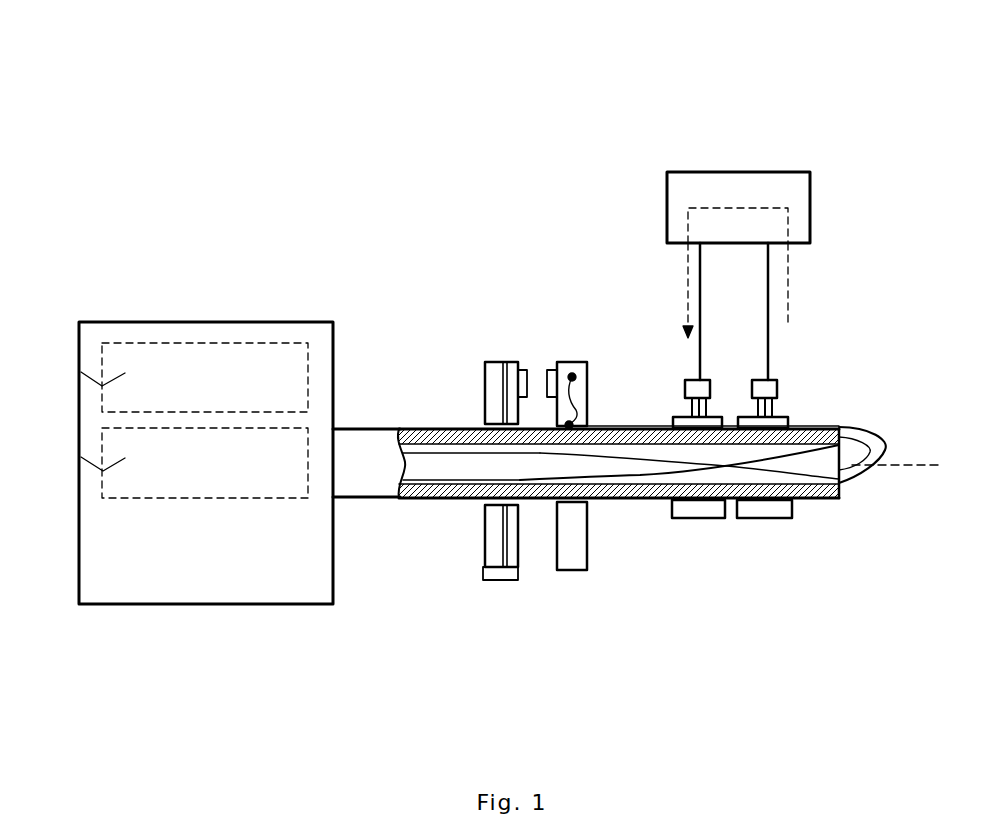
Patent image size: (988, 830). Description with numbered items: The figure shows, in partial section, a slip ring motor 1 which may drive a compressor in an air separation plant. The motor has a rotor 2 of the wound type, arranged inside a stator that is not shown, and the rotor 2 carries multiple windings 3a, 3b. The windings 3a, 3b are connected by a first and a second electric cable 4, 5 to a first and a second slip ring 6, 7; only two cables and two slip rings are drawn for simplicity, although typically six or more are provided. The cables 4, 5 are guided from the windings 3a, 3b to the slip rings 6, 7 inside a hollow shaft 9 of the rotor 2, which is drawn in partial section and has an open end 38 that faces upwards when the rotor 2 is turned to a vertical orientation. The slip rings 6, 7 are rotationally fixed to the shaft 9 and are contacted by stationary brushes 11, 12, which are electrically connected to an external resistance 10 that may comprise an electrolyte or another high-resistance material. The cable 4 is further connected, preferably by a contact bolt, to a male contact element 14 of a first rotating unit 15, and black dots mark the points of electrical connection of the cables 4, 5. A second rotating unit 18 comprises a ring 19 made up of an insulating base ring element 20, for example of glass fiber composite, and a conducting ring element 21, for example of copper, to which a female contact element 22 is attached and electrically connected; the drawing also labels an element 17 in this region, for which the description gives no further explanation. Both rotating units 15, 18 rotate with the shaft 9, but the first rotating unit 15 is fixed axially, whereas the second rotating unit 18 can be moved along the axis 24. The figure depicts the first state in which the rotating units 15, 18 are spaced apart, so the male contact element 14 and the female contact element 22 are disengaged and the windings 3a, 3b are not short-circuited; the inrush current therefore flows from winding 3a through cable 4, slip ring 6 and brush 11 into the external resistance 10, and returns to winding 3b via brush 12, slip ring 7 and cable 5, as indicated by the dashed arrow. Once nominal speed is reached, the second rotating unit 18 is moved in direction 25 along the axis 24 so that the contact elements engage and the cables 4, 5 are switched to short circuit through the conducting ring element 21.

The slip ring motor 1 is at (240, 100).
The rotor 2 is at (160, 604).
The winding 3a is at (79, 371).
The winding 3b is at (79, 456).
The first electric cable 4 is at (408, 500).
The second electric cable 5 is at (422, 444).
The first slip ring 6 is at (775, 520).
The second slip ring 7 is at (700, 520).
The hollow shaft 9 is at (362, 442).
The external resistance 10 is at (705, 190).
The brush 11 is at (780, 388).
The brush 12 is at (706, 388).
The male contact element 14 is at (549, 372).
The first rotating unit 15 is at (580, 346).
The clamping jaw 17 is at (576, 549).
The second rotating unit 18 is at (470, 341).
The ring 19 is at (499, 580).
The base ring element 20 is at (491, 549).
The conducting ring element 21 is at (513, 570).
The female contact element 22 is at (528, 380).
The axis 24 is at (905, 467).
The direction 25 is at (531, 313).
The open end 38 is at (848, 486).